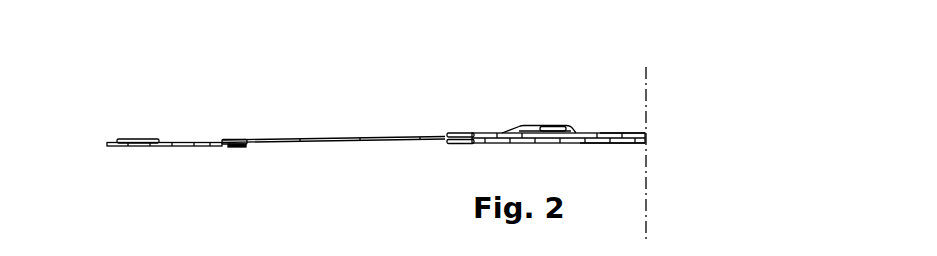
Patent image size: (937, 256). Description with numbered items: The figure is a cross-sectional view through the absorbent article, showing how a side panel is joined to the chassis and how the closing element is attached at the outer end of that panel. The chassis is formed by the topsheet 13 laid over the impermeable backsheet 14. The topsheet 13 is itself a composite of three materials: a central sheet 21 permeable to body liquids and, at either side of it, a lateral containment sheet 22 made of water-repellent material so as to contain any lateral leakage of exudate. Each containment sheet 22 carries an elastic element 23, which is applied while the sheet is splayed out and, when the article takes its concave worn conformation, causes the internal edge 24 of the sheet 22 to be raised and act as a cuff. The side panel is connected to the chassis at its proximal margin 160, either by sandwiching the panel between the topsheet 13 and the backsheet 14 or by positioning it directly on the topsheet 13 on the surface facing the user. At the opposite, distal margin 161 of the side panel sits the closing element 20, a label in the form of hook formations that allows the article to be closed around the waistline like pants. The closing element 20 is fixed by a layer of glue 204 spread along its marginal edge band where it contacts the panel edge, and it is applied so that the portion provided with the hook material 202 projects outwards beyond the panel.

The closing element 20 is at (276, 78).
The hook material 202 is at (99, 90).
The distal margin 161 is at (279, 99).
The layer of glue 204 is at (148, 188).
The topsheet 13 is at (558, 82).
The lateral containment sheet 22 is at (462, 90).
The elastic element 23 is at (594, 78).
The internal edge 24 is at (602, 87).
The central sheet 21 is at (674, 98).
The proximal margin 160 is at (529, 166).
The backsheet 14 is at (693, 187).